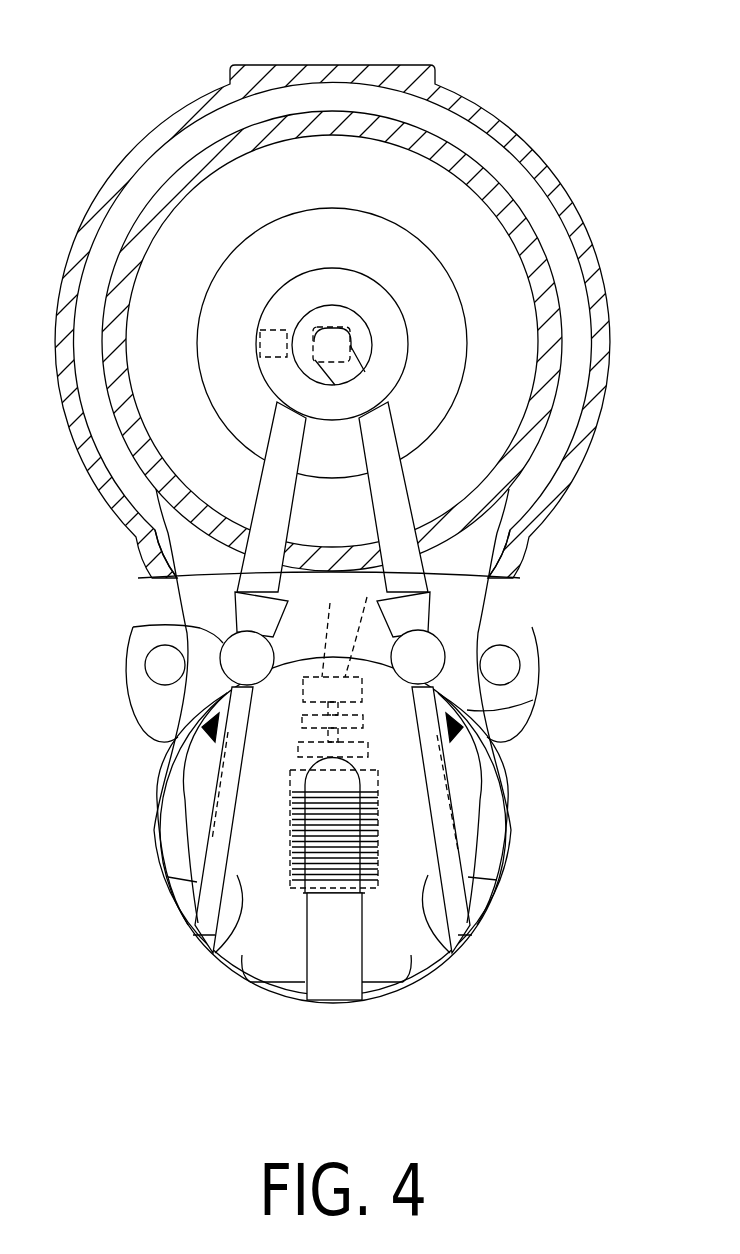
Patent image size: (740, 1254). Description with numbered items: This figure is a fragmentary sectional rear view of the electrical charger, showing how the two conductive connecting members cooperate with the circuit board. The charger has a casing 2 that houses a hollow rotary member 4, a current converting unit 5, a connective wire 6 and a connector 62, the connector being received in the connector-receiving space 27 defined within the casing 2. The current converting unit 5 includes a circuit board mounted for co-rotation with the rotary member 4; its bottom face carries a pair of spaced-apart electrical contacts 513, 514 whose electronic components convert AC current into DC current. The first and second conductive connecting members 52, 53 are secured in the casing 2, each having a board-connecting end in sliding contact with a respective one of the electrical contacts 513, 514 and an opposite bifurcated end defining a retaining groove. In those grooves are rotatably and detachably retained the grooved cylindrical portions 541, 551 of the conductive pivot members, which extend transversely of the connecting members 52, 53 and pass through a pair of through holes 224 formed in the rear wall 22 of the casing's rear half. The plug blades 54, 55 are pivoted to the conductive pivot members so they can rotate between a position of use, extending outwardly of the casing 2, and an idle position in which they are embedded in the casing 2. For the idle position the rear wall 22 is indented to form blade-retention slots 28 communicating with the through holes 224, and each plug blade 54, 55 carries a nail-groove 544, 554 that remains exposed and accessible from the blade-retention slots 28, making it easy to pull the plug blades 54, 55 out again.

The casing 2 is at (531, 128).
The hollow rotary member 4 is at (540, 163).
The connective wire 6 is at (548, 230).
The current converting unit 5 is at (500, 385).
The first conductive connecting member 52 is at (395, 497).
The second conductive connecting member 53 is at (310, 287).
The electrical contact 513 is at (347, 340).
The electrical contact 514 is at (262, 325).
The grooved cylindrical portion 551 is at (123, 625).
The through holes 224 is at (437, 640).
The grooved cylindrical portion 541 is at (445, 655).
The plug blade 54 is at (490, 706).
The nail-groove 544 is at (453, 787).
The rear wall 22 is at (483, 803).
The nail-groove 554 is at (226, 778).
The plug blade 55 is at (200, 830).
The blade-retention slots 28 is at (252, 950).
The connector 62 is at (335, 992).
The connector-receiving space 27 is at (363, 925).